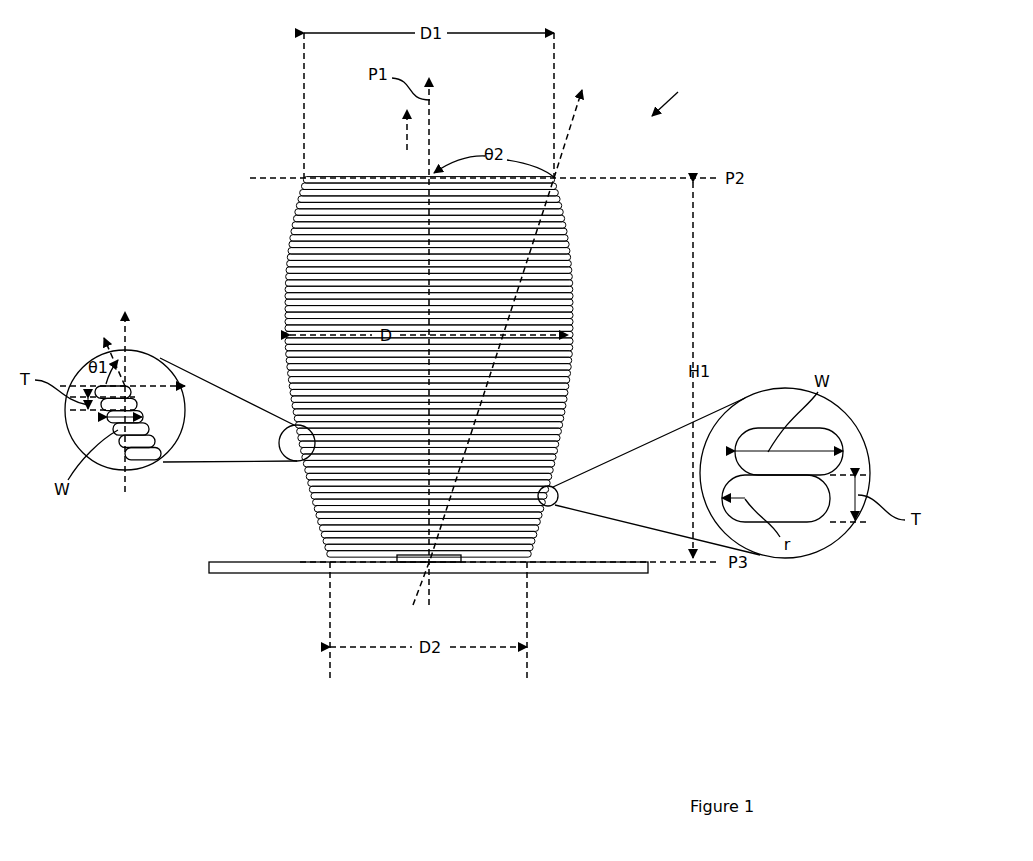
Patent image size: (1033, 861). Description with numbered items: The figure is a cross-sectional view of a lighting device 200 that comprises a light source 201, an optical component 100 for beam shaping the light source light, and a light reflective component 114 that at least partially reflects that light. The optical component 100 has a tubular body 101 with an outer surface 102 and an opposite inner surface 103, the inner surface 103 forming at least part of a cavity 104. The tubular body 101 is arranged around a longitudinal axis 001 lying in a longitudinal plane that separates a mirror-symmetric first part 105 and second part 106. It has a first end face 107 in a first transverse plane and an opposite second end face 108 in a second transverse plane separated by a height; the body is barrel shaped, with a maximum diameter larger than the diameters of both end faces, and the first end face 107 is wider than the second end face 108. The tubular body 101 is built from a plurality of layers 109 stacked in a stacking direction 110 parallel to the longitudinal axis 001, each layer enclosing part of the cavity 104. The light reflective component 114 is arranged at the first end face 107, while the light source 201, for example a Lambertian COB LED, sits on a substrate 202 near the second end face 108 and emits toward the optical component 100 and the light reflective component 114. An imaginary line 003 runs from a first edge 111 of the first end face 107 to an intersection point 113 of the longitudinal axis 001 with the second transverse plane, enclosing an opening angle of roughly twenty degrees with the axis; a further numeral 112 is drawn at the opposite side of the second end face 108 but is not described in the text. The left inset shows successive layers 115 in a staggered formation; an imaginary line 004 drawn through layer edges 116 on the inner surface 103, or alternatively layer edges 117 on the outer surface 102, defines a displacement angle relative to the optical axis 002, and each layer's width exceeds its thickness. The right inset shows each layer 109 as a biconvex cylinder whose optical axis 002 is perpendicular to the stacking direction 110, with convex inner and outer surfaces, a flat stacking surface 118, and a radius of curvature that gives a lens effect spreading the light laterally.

The optical component 100 is at (287, 190).
The tubular body 101 is at (285, 245).
The outer surface 102 is at (283, 292).
The inner surface 103 is at (285, 340).
The cavity 104 is at (388, 215).
The first part 105 is at (290, 222).
The second part 106 is at (563, 222).
The first end face 107 is at (357, 178).
The second end face 108 is at (355, 563).
The layers 109 is at (287, 398).
The stacking direction 110 is at (407, 118).
The first edge 111 is at (560, 178).
The bottom edge of object 112 is at (528, 562).
The intersection point 113 is at (428, 560).
The light reflective component 114 is at (303, 180).
The successive layers 115 is at (95, 388).
The layer edges 116 is at (140, 408).
The layer edges 117 is at (103, 420).
The stacking surface 118 is at (808, 475).
The lighting device 200 is at (680, 96).
The light source 201 is at (455, 562).
The substrate 202 is at (648, 573).
The longitudinal axis 001 is at (430, 328).
The optical axis 002 is at (140, 389).
The imaginary line 003 is at (507, 336).
The imaginary line 004 is at (101, 355).